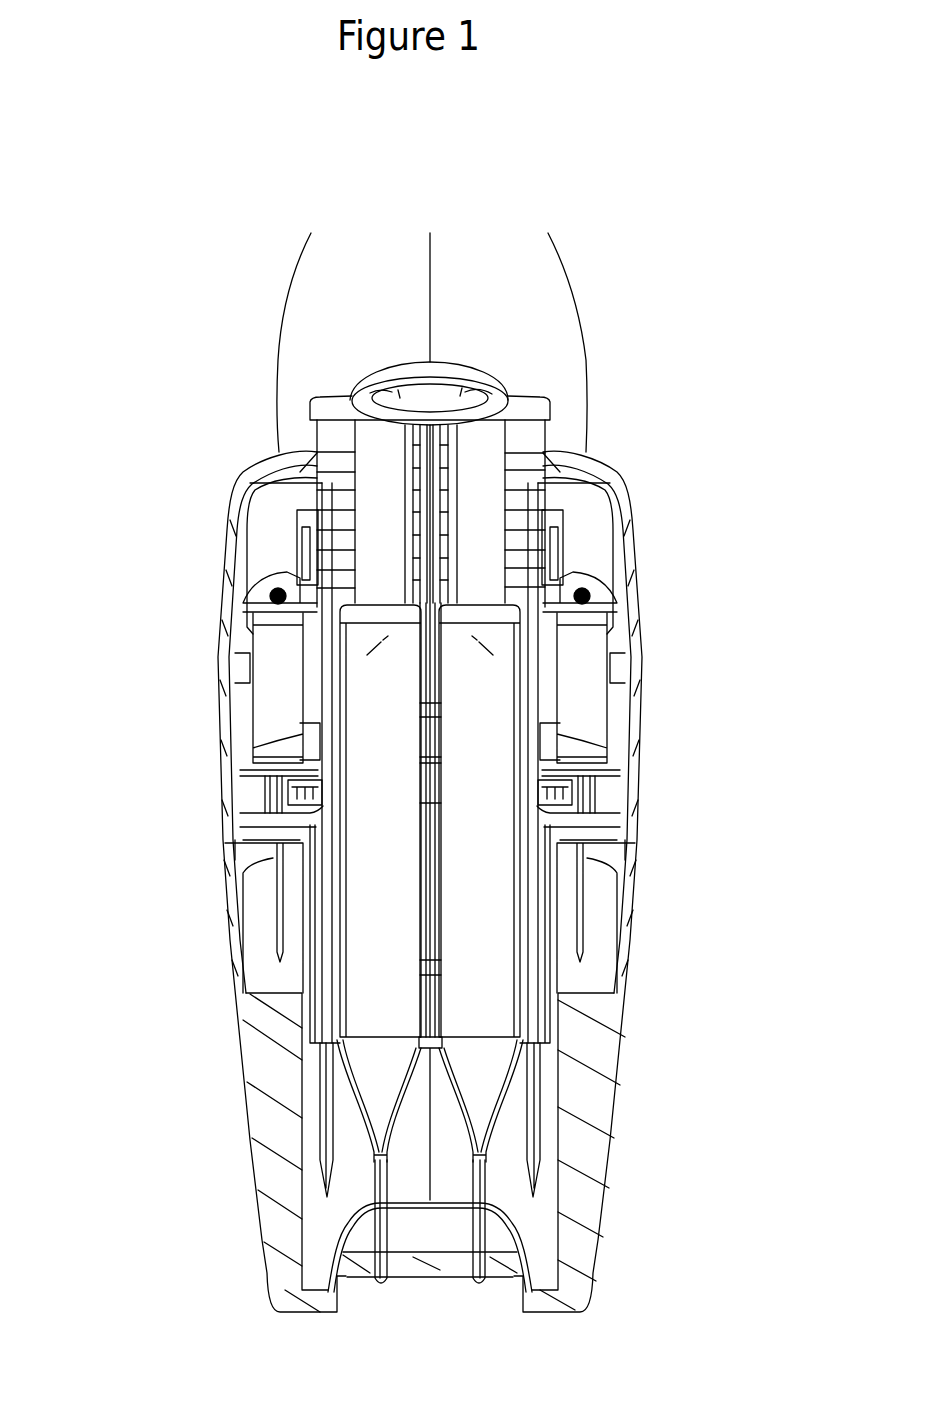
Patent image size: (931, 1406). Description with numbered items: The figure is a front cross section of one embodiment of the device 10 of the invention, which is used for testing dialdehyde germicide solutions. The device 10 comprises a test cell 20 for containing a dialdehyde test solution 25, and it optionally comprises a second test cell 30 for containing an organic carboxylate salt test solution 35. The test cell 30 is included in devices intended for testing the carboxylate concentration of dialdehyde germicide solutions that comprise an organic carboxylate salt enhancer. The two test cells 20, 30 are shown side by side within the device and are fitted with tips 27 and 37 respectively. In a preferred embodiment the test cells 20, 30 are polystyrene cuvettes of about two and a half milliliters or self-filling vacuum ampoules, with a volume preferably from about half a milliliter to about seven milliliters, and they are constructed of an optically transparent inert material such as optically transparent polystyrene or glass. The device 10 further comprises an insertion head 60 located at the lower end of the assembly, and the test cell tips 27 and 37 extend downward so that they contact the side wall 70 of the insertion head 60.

The device 10 is at (660, 707).
The organic carboxylate salt test solution 35 is at (378, 935).
The dialdehyde test solution 25 is at (477, 935).
The insertion head 60 is at (627, 1010).
The test cell 30 is at (357, 1100).
The test cell 20 is at (507, 1097).
The tip 37 is at (378, 1225).
The tip 27 is at (484, 1225).
The side wall 70 is at (428, 1233).